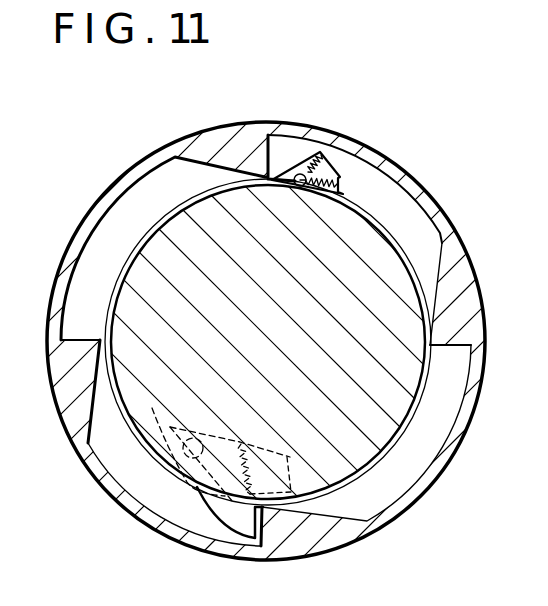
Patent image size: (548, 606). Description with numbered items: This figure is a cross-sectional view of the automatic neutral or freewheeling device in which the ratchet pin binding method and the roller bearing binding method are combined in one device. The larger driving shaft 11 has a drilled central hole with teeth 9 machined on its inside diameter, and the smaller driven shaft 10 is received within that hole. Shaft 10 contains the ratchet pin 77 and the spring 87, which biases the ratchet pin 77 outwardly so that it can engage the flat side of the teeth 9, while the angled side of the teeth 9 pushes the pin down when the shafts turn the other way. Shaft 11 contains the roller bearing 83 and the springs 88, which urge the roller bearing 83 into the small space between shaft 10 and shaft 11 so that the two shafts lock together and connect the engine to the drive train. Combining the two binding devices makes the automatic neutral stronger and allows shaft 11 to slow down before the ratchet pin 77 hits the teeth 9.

The teeth 9 is at (445, 328).
The smaller driven shaft 10 is at (393, 270).
The larger driving shaft 11 is at (375, 152).
The ratchet pin 77 is at (166, 425).
The roller bearing 83 is at (297, 186).
The spring 87 is at (292, 456).
The springs 88 is at (319, 190).